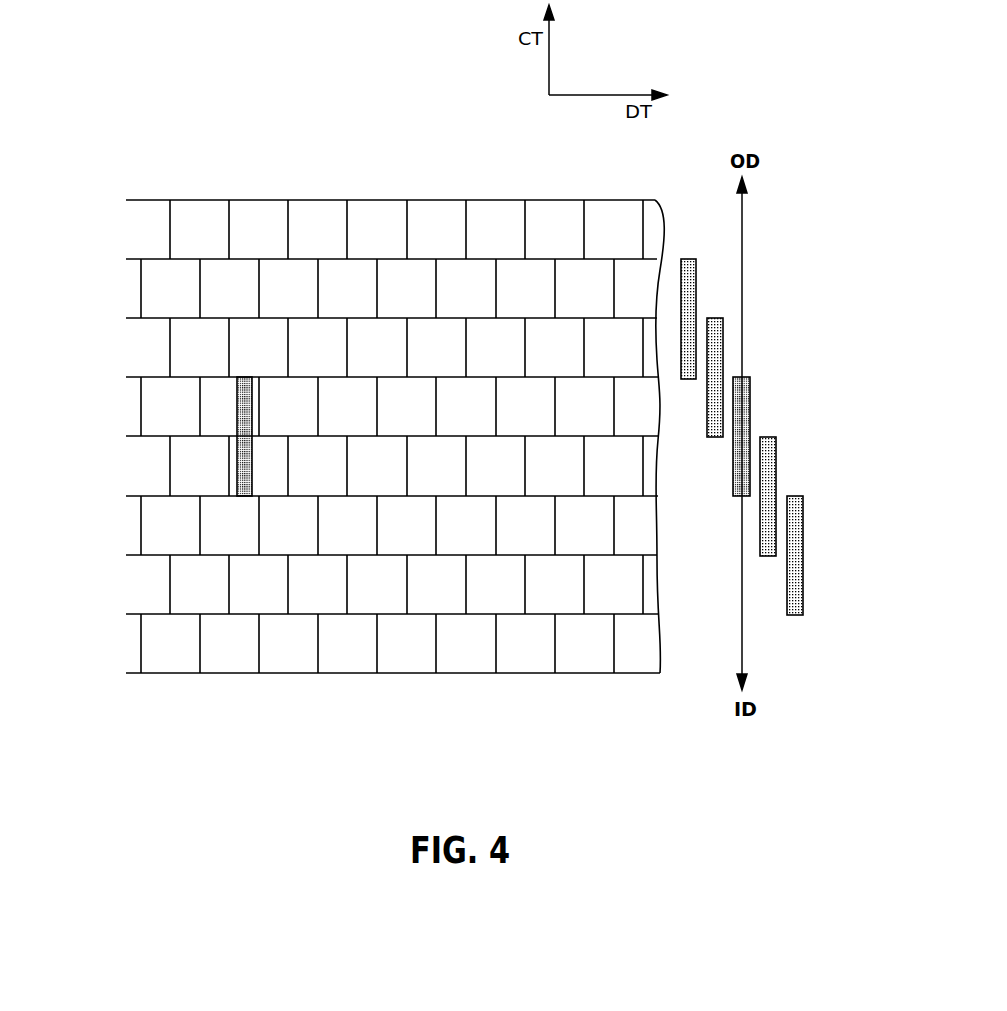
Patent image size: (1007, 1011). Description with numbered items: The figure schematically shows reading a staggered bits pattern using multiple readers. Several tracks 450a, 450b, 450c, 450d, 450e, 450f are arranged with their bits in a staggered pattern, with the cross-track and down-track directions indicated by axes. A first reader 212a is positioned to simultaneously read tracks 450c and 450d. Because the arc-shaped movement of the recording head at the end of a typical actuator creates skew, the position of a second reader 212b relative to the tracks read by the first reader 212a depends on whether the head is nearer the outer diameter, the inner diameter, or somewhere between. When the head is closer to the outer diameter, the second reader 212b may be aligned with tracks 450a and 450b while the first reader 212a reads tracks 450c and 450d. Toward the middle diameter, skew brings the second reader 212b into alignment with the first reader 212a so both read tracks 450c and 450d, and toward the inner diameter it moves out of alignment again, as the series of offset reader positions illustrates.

The first reader 212a is at (250, 395).
The second reader 212b is at (803, 500).
The track 450a is at (119, 290).
The track 450b is at (119, 349).
The track 450c is at (119, 408).
The track 450d is at (119, 467).
The track 450e is at (119, 526).
The track 450f is at (119, 585).